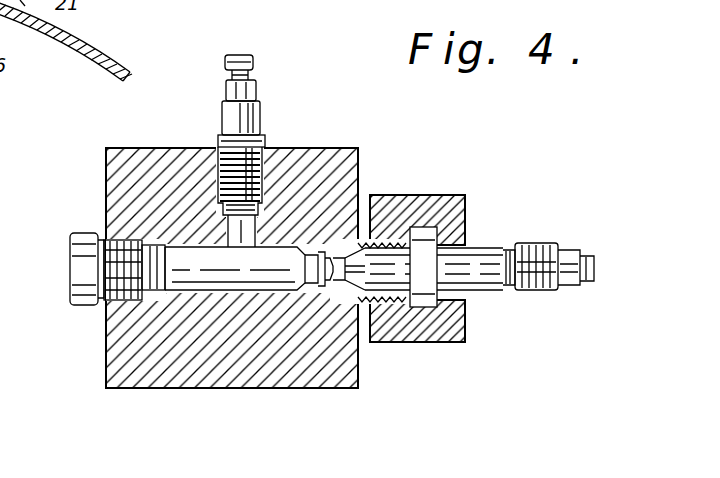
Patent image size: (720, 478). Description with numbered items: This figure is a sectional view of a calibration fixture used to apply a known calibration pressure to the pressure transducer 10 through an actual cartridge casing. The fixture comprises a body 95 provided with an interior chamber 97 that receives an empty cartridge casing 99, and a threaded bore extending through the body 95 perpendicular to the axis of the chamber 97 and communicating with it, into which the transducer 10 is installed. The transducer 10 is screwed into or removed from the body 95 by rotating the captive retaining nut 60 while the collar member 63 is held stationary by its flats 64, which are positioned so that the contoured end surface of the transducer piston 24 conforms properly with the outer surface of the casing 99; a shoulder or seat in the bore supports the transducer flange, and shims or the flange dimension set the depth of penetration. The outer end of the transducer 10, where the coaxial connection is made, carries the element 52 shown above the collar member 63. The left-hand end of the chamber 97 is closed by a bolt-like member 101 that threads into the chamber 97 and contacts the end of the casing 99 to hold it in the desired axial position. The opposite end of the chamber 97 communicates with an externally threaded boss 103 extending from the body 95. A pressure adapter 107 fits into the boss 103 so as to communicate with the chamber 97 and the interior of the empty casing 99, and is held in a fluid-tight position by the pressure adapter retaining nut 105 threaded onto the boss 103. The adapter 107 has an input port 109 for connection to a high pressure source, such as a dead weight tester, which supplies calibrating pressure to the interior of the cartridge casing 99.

The pressure transducer 10 is at (270, 112).
The piston member 24 is at (226, 232).
The cap 52 is at (242, 55).
The captive retaining nut 60 is at (228, 118).
The collar member 63 is at (253, 90).
The external flats 64 is at (255, 98).
The body 95 is at (130, 388).
The interior chamber 97 is at (150, 295).
The cartridge casing 99 is at (236, 276).
The bolt-like member 101 is at (80, 272).
The boss 103 is at (393, 335).
The pressure adapter retaining nut 105 is at (440, 195).
The pressure adapter 107 is at (480, 288).
The input port 109 is at (568, 264).